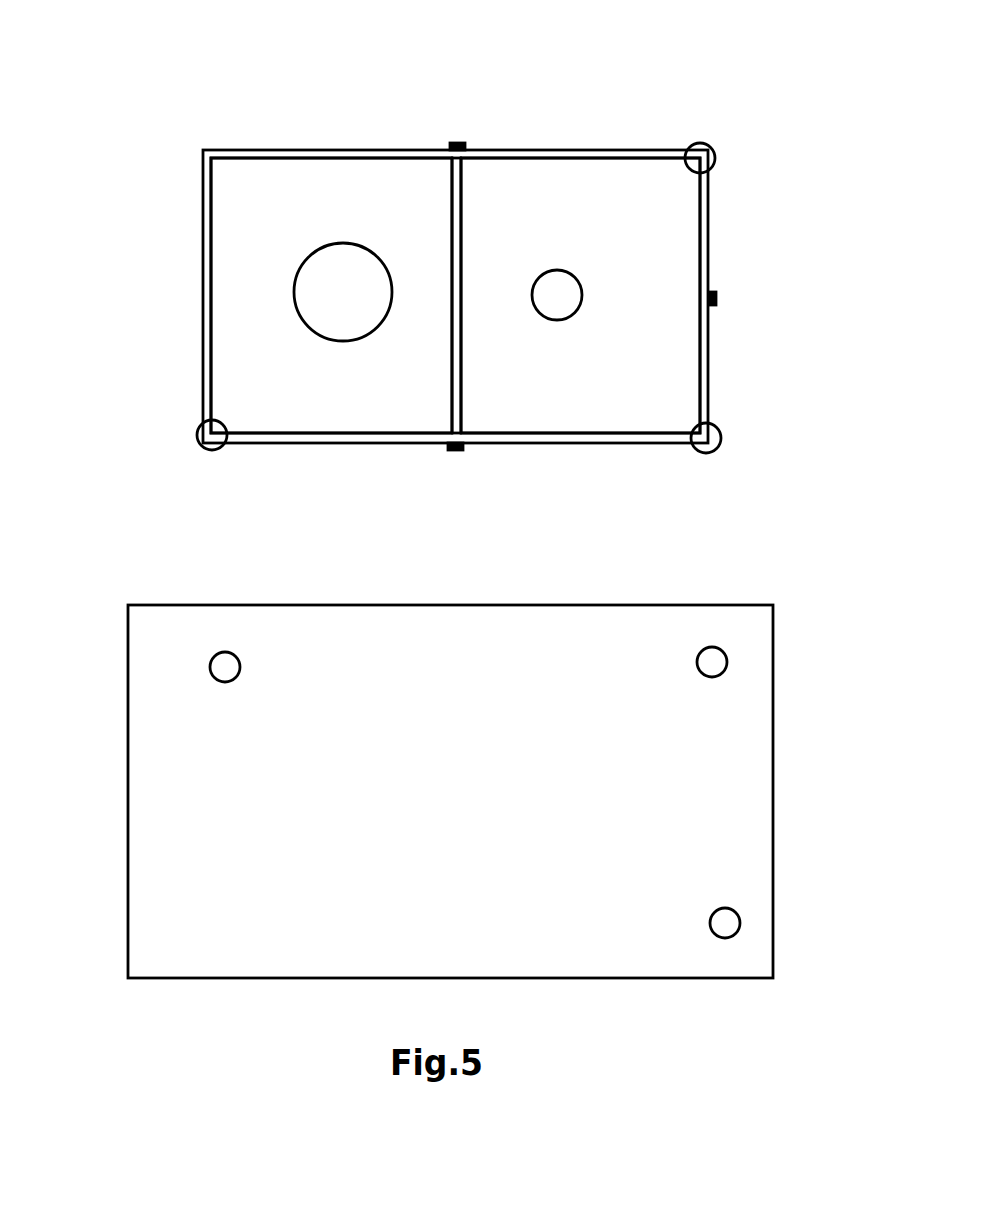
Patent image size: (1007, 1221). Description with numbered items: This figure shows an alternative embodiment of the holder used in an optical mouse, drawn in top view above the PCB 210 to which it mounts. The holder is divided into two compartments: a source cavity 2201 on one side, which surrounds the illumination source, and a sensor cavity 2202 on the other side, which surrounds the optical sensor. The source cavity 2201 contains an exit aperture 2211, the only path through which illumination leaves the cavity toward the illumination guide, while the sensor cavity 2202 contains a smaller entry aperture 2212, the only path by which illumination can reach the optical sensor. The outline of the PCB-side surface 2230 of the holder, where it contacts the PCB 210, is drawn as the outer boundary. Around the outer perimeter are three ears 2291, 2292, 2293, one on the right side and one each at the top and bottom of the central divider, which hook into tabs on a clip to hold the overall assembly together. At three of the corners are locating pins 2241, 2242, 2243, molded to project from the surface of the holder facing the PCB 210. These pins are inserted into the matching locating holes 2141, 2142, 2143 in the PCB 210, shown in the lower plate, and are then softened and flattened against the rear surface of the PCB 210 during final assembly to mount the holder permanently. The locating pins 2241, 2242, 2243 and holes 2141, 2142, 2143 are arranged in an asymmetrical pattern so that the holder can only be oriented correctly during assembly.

The PCB 210 is at (272, 937).
The locating hole 2141 is at (227, 662).
The locating hole 2142 is at (713, 660).
The locating hole 2143 is at (728, 922).
The source cavity 2201 is at (280, 348).
The sensor cavity 2202 is at (593, 218).
The exit aperture 2211 is at (330, 277).
The entry aperture 2212 is at (567, 303).
The PCB-side surface 2230 is at (207, 302).
The locating pin 2241 is at (212, 450).
The locating pin 2242 is at (710, 448).
The locating pin 2243 is at (703, 147).
The ear 2291 is at (716, 298).
The ear 2292 is at (455, 143).
The ear 2293 is at (455, 452).